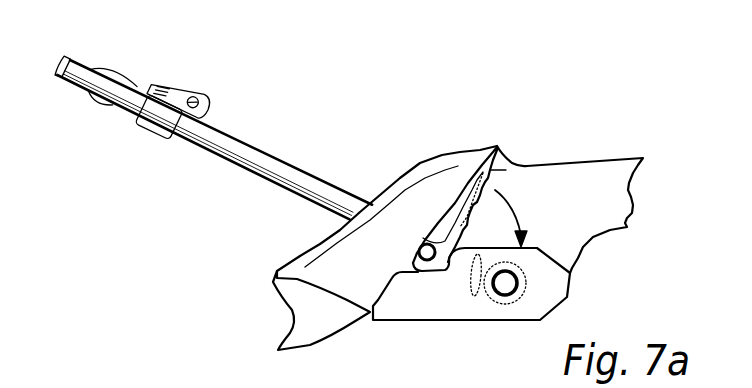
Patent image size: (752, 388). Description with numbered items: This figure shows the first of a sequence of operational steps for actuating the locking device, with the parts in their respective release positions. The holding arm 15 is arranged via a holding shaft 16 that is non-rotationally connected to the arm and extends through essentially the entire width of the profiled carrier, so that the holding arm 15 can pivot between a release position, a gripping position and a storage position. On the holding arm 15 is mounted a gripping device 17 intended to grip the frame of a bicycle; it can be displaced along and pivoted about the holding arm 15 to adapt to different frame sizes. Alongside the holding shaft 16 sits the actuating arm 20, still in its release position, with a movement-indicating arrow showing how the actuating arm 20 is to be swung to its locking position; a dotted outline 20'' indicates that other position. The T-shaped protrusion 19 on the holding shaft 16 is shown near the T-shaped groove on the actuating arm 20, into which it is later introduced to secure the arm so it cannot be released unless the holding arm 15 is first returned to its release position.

The holding arm 15 is at (250, 152).
The holding shaft 16 is at (501, 287).
The gripping device 17 is at (182, 87).
The T-shaped protrusion 19 is at (470, 277).
The actuating arm 20 is at (439, 180).
The lever initial position 20'' is at (461, 149).